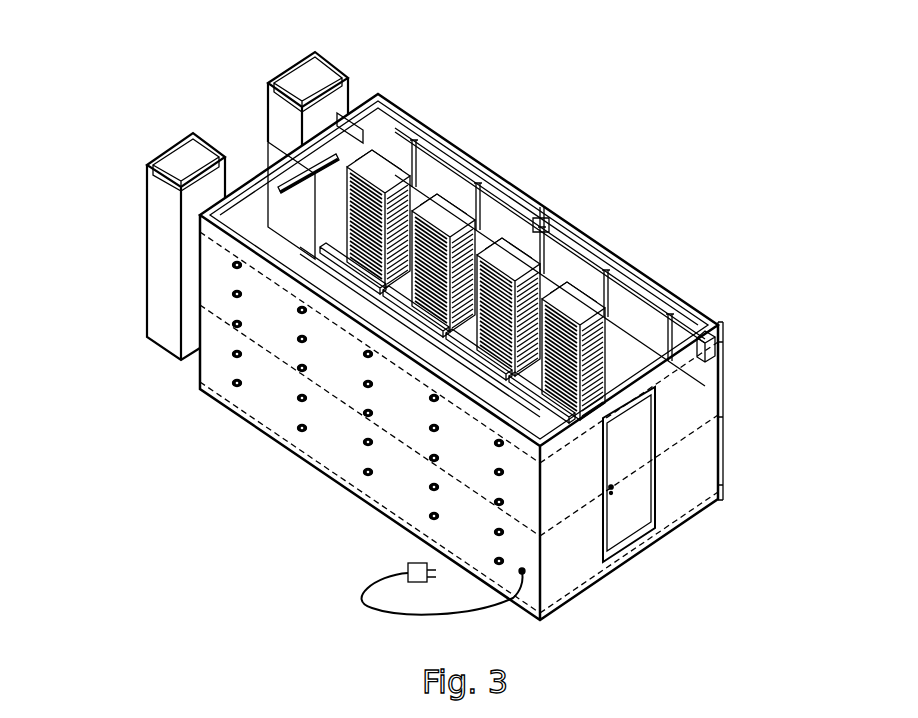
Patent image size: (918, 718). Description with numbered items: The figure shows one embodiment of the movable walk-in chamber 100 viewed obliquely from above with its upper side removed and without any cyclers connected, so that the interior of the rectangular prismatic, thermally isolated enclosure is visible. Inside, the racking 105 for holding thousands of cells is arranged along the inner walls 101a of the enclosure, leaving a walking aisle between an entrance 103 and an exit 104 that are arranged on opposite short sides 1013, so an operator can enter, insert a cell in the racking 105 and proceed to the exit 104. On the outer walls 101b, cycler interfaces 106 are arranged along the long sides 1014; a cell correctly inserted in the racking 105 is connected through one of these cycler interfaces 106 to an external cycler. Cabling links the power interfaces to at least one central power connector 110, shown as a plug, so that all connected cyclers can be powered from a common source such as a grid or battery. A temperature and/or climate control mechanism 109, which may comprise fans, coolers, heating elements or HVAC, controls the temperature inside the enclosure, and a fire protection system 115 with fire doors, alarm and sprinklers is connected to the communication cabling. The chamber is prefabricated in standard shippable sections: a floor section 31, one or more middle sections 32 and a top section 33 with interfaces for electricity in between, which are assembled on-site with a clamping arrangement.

The movable walk-in chamber 100 is at (688, 164).
The inner walls 101a is at (586, 274).
The outer walls 101b is at (317, 384).
The entrance 103 is at (660, 500).
The exit 104 is at (250, 137).
The racking 105 is at (476, 229).
The cycler interfaces 106 is at (347, 413).
The temperature and/or climate control mechanism 109 is at (137, 246).
The central power connector 110 is at (530, 573).
The fire protection system 115 is at (704, 330).
The short sides 1013 is at (663, 552).
The long sides 1014 is at (370, 497).
The floor section 31 is at (723, 493).
The middle sections 32 is at (731, 449).
The top section 33 is at (723, 331).